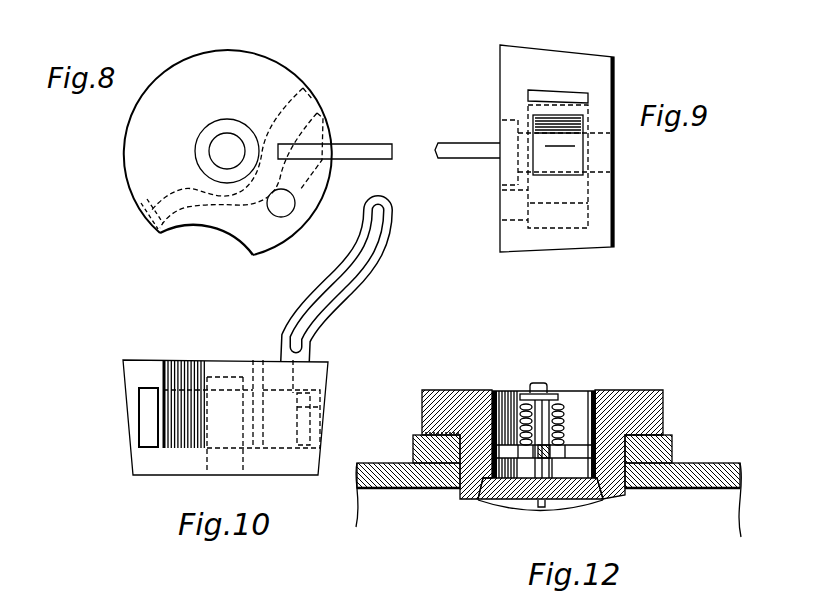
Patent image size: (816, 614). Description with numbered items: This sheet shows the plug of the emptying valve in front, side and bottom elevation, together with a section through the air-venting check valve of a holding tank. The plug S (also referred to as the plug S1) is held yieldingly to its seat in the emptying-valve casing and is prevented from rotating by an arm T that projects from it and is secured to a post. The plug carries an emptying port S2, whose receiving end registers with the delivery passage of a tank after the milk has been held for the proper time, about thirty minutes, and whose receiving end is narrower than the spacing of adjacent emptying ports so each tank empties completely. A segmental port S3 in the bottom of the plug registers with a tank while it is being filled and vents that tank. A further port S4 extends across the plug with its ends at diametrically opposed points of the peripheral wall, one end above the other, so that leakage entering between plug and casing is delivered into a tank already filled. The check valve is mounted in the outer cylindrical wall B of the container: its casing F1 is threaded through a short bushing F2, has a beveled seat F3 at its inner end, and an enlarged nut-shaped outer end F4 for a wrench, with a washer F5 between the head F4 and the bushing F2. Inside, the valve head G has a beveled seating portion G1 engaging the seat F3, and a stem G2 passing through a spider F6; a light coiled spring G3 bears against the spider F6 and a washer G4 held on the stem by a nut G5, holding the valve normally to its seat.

In FIG. 8, the plug S is at (228, 152).
In FIG. 9, the plug S is at (600, 80).
In FIG. 10, the plug S is at (305, 460).
In FIG. 9, the plug S1 is at (601, 53).
In FIG. 10, the plug S1 is at (325, 422).
In FIG. 8, the emptying port S2 is at (302, 182).
In FIG. 9, the emptying port S2 is at (577, 157).
In FIG. 10, the emptying port S2 is at (332, 400).
In FIG. 8, the segmental port S3 is at (223, 243).
In FIG. 9, the segmental port S3 is at (507, 207).
In FIG. 10, the segmental port S3 is at (197, 390).
In FIG. 8, the port S4 is at (162, 210).
In FIG. 9, the port S4 is at (548, 94).
In FIG. 10, the port S4 is at (152, 423).
In FIG. 8, the arm T is at (363, 153).
In FIG. 9, the arm T is at (462, 152).
In FIG. 10, the arm T is at (357, 288).
In FIG. 12, the outer cylindrical wall B is at (660, 488).
In FIG. 12, the casing F1 is at (472, 448).
In FIG. 12, the short bushing F2 is at (672, 445).
In FIG. 12, the beveled seat F3 is at (478, 503).
In FIG. 12, the nut-shaped head F4 is at (663, 400).
In FIG. 12, the washer F5 is at (663, 418).
In FIG. 12, the spider F6 is at (565, 446).
In FIG. 12, the head G is at (557, 503).
In FIG. 12, the beveled seating portion G1 is at (597, 503).
In FIG. 12, the stem G2 is at (553, 396).
In FIG. 12, the coiled spring G3 is at (522, 415).
In FIG. 12, the washer G4 is at (526, 395).
In FIG. 12, the nut G5 is at (541, 384).